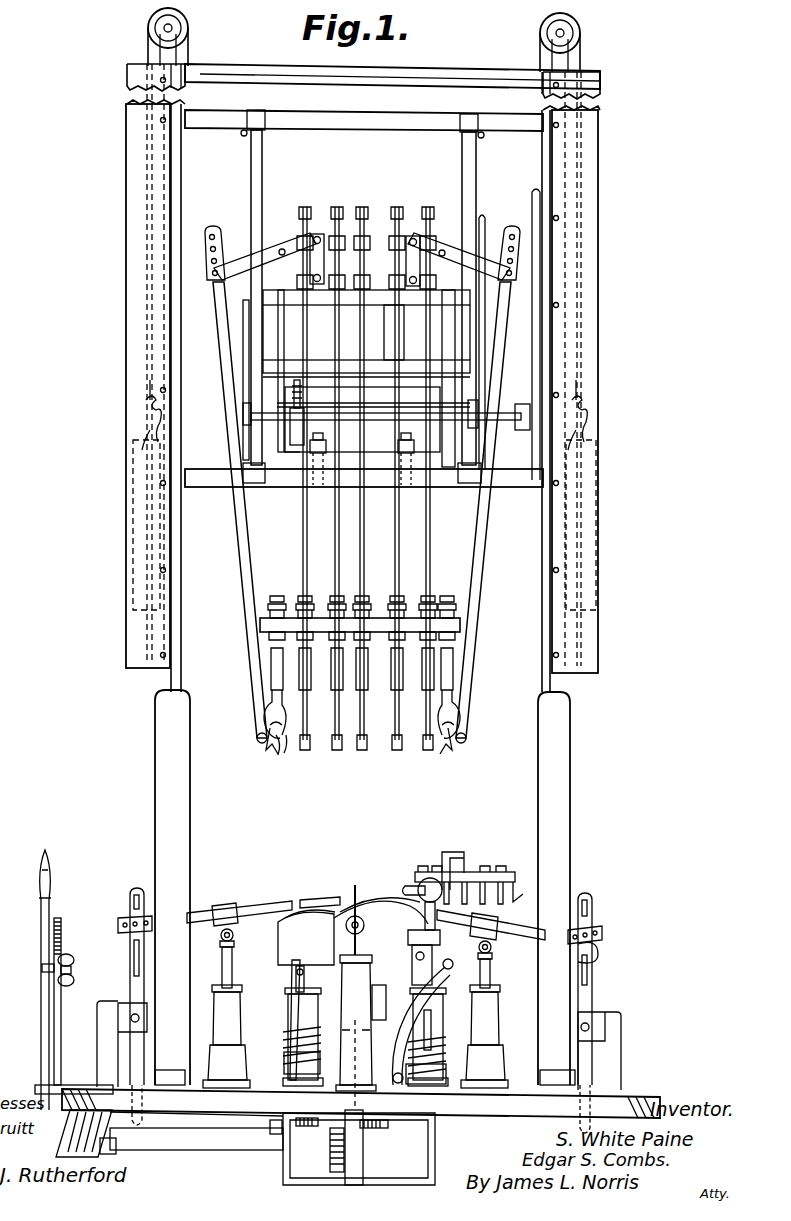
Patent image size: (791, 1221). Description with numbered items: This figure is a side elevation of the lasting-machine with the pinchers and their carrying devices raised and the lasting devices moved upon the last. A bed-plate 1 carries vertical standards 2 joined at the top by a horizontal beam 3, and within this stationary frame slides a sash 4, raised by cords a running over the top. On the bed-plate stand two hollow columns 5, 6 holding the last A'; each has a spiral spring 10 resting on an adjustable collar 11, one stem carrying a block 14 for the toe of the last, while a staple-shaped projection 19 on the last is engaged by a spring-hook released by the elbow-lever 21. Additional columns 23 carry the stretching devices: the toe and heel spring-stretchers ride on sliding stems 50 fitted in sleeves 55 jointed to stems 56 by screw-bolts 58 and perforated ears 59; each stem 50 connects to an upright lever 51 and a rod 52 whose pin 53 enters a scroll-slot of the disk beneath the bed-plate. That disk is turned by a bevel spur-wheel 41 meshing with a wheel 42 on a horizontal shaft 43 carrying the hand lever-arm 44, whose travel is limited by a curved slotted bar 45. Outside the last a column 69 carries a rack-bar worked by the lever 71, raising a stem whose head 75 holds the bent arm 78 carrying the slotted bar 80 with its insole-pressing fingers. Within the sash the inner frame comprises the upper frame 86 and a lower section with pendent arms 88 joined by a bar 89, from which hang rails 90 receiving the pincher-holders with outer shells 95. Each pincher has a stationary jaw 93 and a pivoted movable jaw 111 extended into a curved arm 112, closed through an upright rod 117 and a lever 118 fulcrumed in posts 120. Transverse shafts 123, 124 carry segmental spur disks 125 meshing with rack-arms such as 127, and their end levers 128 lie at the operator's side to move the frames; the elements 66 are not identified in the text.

The bed-plate 1 is at (361, 1103).
The vertical standards 2 is at (362, 887).
The horizontal beam 3 is at (392, 69).
The sliding sash 4 is at (364, 298).
The column 5 is at (290, 1013).
The column 6 is at (436, 1017).
The spiral spring 10 is at (288, 1034).
The adjustable collar 11 is at (365, 1068).
The block 14 is at (428, 931).
The staple-shaped projection 19 is at (300, 978).
The elbow-lever 21 is at (361, 997).
The columns 23 is at (355, 1036).
The bevel spur-wheel 41 is at (372, 1140).
The bevel wheel 42 is at (332, 1136).
The horizontal shaft 43 is at (191, 1140).
The lever-arm 44 is at (41, 1034).
The curved slotted bar 45 is at (59, 1001).
The sliding stem 50 is at (366, 912).
The upright lever 51 is at (132, 949).
The rod 52 is at (169, 1133).
The pin 53 is at (265, 1125).
The sleeves 55 is at (355, 921).
The stems 56 is at (480, 960).
The screw-bolts 58 is at (222, 943).
The perforated ears 59 is at (369, 941).
The curved arm 66 is at (418, 972).
The column 69 is at (432, 946).
The lever 71 is at (598, 948).
The head 75 is at (418, 882).
The bent arm 78 is at (453, 860).
The slotted bar 80 is at (490, 872).
The upper frame 86 is at (416, 324).
The pendent arms 88 is at (300, 403).
The bar 89 is at (362, 459).
The rails 90 is at (462, 628).
The stationary jaw 93 is at (287, 748).
The outer shell 95 is at (272, 668).
The movable jaw 111 is at (268, 745).
The curved arm 112 is at (268, 700).
The upright rod 117 is at (243, 392).
The lever 118 is at (264, 484).
The fulcrum-post 120 is at (305, 340).
The transverse shaft 123 is at (373, 404).
The transverse shaft 124 is at (499, 423).
The segmental spur disks 125 is at (300, 432).
The rack-arm 127 is at (463, 468).
The end lever 128 is at (542, 282).
The cords a is at (186, 51).
The last A' is at (306, 937).